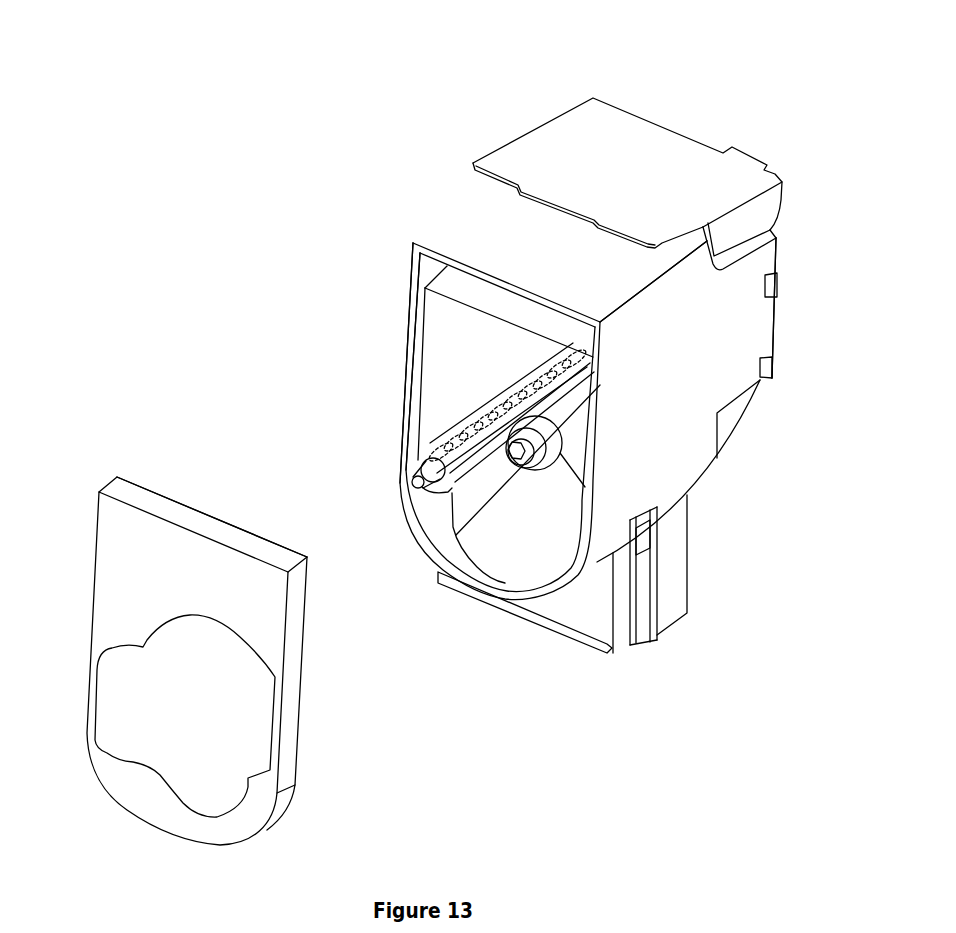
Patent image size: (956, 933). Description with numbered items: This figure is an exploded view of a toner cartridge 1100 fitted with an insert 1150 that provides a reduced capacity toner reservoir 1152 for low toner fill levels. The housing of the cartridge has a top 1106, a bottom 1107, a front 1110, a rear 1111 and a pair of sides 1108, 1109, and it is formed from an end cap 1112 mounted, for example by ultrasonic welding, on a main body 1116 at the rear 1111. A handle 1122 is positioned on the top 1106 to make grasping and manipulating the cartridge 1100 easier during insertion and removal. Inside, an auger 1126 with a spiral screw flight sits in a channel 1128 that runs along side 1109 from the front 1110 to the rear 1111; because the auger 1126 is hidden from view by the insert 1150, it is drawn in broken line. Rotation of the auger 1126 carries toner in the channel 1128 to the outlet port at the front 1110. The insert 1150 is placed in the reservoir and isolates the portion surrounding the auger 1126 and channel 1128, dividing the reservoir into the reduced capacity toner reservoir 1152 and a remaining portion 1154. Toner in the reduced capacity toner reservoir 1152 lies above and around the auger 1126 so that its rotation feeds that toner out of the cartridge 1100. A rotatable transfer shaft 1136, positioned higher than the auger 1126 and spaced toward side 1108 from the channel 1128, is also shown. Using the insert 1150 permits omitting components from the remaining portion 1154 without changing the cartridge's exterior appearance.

The toner cartridge 1100 is at (372, 103).
The top 1106 is at (458, 225).
The bottom 1107 is at (598, 655).
The side 1108 is at (680, 453).
The side 1109 is at (410, 298).
The front 1110 is at (778, 247).
The rear 1111 is at (109, 534).
The end cap 1112 is at (126, 487).
The main body 1116 is at (752, 337).
The handle 1122 is at (636, 132).
The auger 1126 is at (476, 412).
The channel 1128 is at (444, 431).
The transfer shaft 1136 is at (563, 420).
The insert 1150 is at (420, 343).
The reduced capacity toner reservoir 1152 is at (451, 379).
The remaining portion 1154 is at (519, 538).